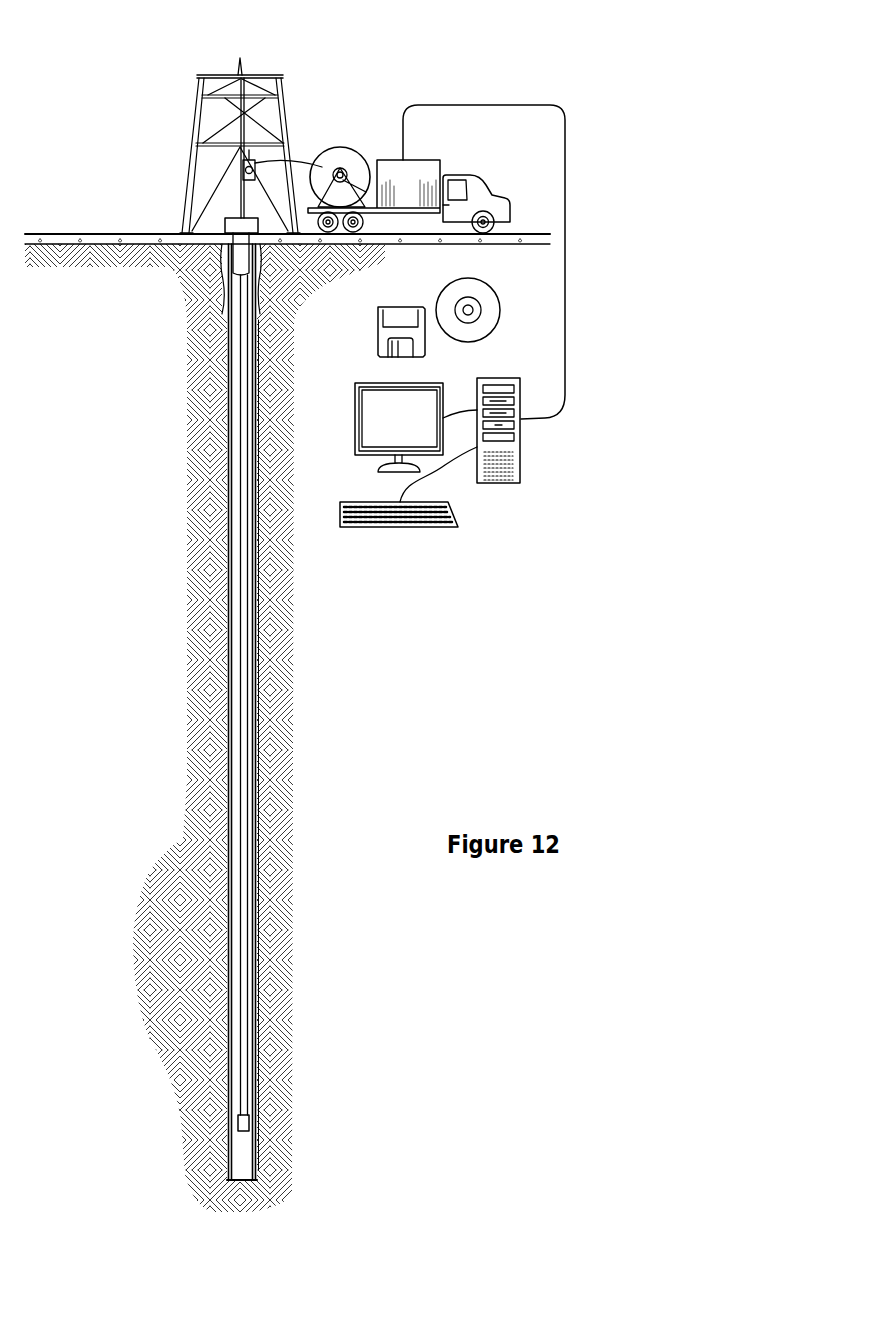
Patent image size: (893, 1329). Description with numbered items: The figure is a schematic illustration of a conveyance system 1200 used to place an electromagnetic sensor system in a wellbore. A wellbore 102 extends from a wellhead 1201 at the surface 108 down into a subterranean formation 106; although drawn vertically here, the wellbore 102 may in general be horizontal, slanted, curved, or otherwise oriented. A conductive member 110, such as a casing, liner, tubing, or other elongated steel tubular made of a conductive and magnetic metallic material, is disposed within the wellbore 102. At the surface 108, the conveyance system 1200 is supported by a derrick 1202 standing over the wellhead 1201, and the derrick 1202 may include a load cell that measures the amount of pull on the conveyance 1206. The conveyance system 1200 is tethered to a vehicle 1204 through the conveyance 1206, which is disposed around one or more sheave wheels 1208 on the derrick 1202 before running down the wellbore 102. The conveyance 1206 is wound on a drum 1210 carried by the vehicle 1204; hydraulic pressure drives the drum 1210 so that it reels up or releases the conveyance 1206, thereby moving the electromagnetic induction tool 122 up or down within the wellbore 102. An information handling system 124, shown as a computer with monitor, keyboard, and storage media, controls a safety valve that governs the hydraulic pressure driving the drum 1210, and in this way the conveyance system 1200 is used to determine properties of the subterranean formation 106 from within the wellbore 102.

The conveyance system 1200 is at (453, 44).
The derrick 1202 is at (200, 112).
The sheave wheel 1208 is at (243, 170).
The wellhead 1201 is at (235, 218).
The surface 108 is at (72, 233).
The drum 1210 is at (340, 147).
The vehicle 1204 is at (420, 160).
The wellbore 102 is at (257, 386).
The conductive member 110 is at (258, 452).
The conveyance 1206 is at (242, 530).
The subterranean formation 106 is at (205, 953).
The electromagnetic induction tool 122 is at (250, 1122).
The information handling system 124 is at (473, 506).